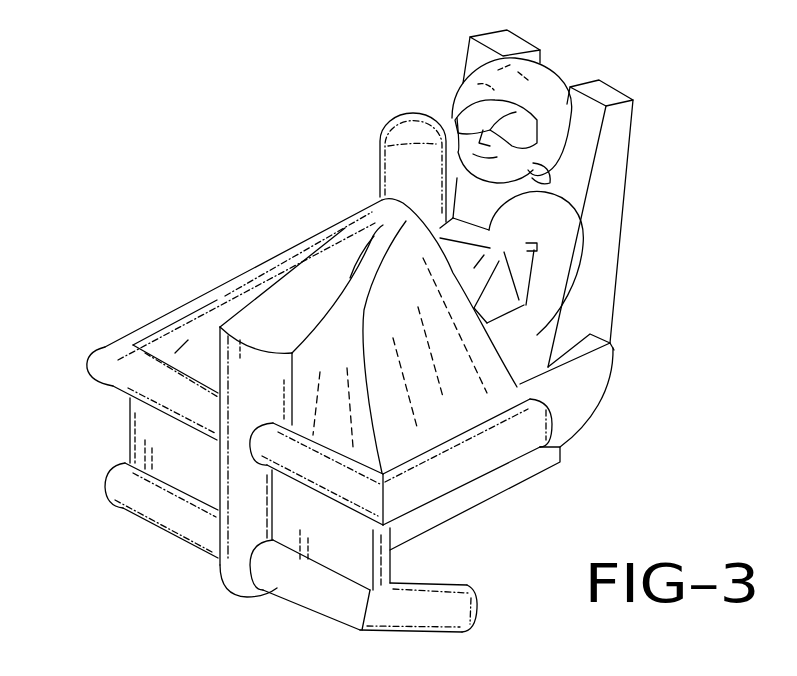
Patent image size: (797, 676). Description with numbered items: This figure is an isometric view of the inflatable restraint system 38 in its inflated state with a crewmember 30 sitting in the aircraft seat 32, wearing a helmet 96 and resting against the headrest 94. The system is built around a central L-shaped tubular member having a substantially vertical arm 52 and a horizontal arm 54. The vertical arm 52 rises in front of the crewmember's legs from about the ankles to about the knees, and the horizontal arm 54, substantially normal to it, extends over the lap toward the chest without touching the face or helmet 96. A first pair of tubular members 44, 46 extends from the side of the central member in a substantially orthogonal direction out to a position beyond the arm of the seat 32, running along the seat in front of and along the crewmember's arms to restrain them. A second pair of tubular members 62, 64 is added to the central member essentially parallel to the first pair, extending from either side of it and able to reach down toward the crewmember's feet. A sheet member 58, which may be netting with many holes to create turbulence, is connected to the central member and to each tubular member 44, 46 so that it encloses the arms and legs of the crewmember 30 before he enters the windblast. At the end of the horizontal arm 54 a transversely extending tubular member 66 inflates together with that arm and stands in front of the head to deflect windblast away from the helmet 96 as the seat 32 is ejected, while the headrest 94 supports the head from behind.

The crewmember 30 is at (563, 237).
The aircraft seat 32 is at (563, 413).
The inflatable restraint system 38 is at (125, 210).
The tubular member 44 is at (105, 345).
The tubular member 46 is at (497, 447).
The vertical arm 52 is at (218, 584).
The horizontal arm 54 is at (268, 322).
The sheet member 58 is at (318, 532).
The tubular member 62 is at (410, 633).
The tubular member 64 is at (127, 513).
The transversely extending tubular member 66 is at (378, 163).
The headrest 94 is at (580, 105).
The helmet 96 is at (487, 78).